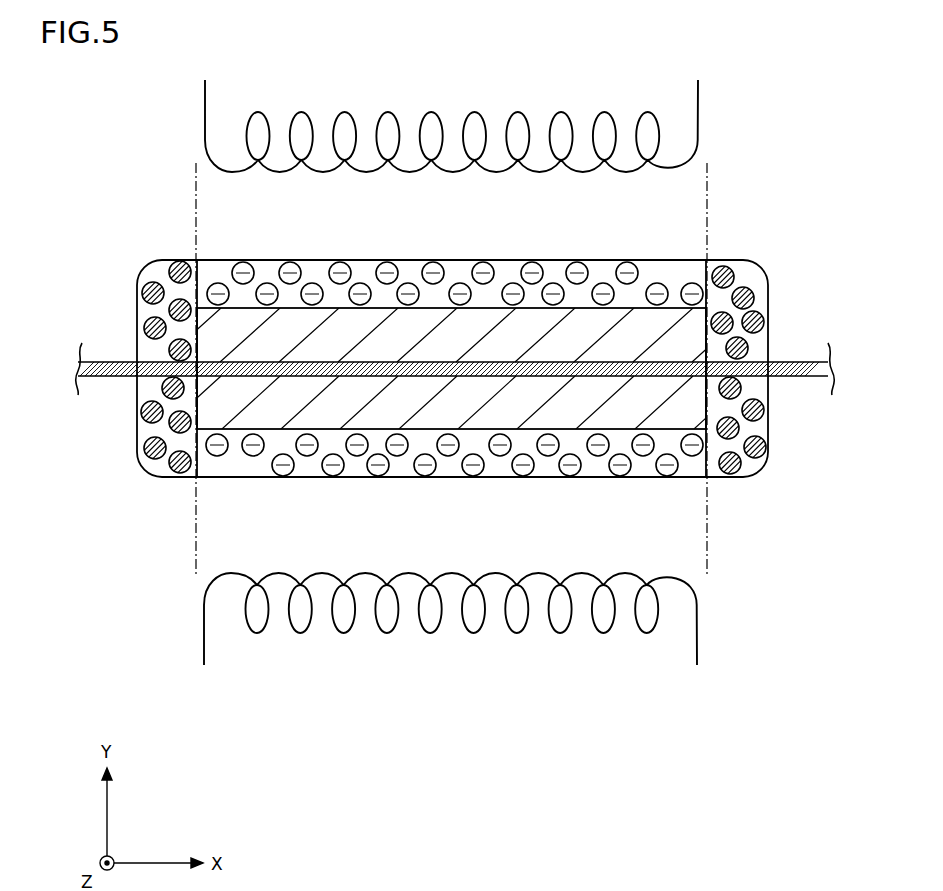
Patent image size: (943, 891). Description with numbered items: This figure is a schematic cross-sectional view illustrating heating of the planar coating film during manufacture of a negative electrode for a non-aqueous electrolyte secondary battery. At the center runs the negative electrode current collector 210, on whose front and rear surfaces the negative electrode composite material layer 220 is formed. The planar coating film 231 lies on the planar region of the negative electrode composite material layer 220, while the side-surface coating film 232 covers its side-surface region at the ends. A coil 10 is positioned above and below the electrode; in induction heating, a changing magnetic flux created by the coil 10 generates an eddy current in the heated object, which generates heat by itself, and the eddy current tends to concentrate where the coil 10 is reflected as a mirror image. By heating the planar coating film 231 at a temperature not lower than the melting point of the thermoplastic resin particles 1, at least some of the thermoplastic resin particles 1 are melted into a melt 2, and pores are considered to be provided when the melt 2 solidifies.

The coil 10 is at (205, 108).
The negative electrode current collector 210 is at (795, 362).
The negative electrode composite material layer 220 is at (673, 317).
The planar coating film 231 is at (464, 258).
The side-surface coating film 232 is at (743, 258).
The thermoplastic resin particles 1 is at (181, 471).
The melt 2 is at (521, 471).